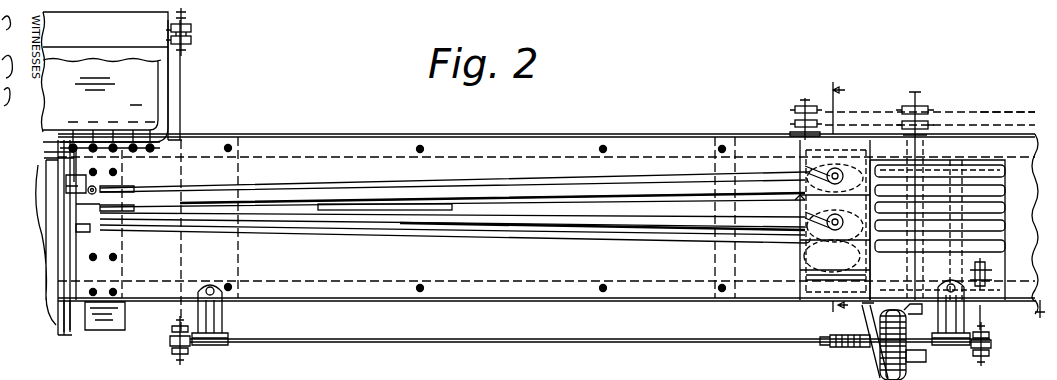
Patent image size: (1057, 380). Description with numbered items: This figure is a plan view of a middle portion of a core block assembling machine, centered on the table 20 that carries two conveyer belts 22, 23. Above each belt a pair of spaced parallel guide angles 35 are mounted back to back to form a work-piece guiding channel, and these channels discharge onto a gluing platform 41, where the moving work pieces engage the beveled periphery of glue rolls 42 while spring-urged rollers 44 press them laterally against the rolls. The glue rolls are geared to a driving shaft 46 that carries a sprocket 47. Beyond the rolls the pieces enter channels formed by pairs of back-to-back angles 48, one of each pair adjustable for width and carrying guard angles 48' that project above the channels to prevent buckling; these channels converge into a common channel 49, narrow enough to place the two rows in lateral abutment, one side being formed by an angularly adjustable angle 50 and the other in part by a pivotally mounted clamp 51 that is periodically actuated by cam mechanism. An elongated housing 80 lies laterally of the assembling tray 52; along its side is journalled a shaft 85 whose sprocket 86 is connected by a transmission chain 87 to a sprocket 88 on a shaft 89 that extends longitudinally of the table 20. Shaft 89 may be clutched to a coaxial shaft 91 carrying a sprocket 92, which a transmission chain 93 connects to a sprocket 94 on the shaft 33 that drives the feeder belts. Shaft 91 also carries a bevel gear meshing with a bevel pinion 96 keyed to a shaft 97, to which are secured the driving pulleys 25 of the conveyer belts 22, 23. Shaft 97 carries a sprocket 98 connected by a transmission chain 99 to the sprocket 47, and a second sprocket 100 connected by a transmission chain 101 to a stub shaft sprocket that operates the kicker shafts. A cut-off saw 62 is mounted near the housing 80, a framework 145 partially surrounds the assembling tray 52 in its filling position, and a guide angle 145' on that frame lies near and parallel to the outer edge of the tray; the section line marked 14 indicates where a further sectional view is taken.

The section line 14 is at (836, 198).
The table 20 is at (549, 138).
The conveyer belt 22 is at (1033, 202).
The conveyer belt 23 is at (1021, 248).
The driving pulleys 25 is at (962, 150).
The shaft 33 is at (1031, 310).
The guide angles 35 is at (997, 180).
The gluing platform 41 is at (800, 300).
The glue rolls 42 is at (790, 305).
The spring-urged rollers 44 is at (837, 172).
The driving shaft 46 is at (812, 114).
The sprocket 47 is at (792, 118).
The angles 48 is at (455, 205).
The guard angles 48' is at (126, 179).
The common channel 49 is at (78, 210).
The angularly adjustable angle 50 is at (80, 224).
The pivotally mounted clamp 51 is at (70, 185).
The assembling tray 52 is at (44, 262).
The cut-off saw 62 is at (53, 161).
The elongated housing 80 is at (144, 90).
The shaft 85 is at (191, 38).
The sprocket 86 is at (182, 24).
The transmission chain 87 is at (186, 118).
The sprocket 88 is at (182, 362).
The shaft 89 is at (346, 342).
The coaxial shaft 91 is at (927, 348).
The sprocket 92 is at (986, 354).
The transmission chain 93 is at (982, 306).
The sprocket 94 is at (970, 272).
The bevel pinion 96 is at (902, 316).
The shaft 97 is at (915, 189).
The sprocket 98 is at (933, 124).
The transmission chain 99 is at (872, 118).
The second sprocket 100 is at (930, 110).
The transmission chain 101 is at (1023, 108).
The framework 145 is at (112, 327).
The guide angle 145' is at (56, 326).